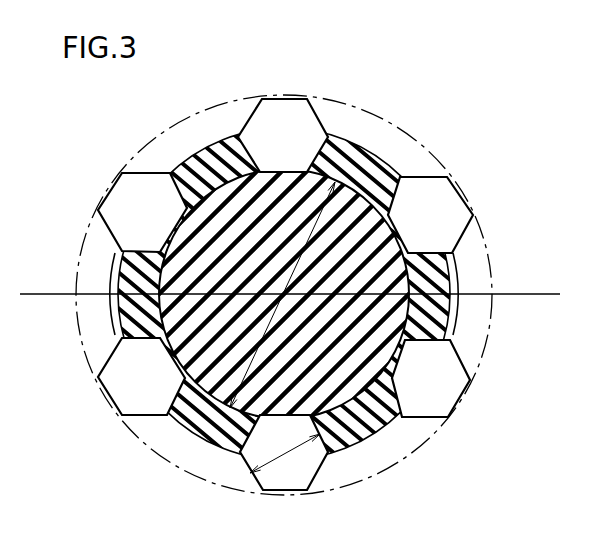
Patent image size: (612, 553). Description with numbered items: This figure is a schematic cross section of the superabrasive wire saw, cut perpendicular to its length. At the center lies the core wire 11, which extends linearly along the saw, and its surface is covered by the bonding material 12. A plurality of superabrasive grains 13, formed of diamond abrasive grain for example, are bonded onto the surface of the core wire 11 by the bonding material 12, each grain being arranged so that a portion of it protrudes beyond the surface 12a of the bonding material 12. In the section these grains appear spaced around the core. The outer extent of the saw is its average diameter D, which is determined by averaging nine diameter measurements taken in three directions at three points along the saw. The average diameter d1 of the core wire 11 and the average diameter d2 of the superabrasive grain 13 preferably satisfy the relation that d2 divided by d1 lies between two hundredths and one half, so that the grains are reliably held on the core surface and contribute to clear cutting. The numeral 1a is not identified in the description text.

The conductor assembly 1a is at (362, 428).
The core wire 11 is at (377, 227).
The bonding material 12 is at (365, 175).
The surface of bonding material 12a is at (455, 313).
The superabrasive grain 13 is at (284, 116).
The average diameter of core wire d1 is at (282, 295).
The average diameter of superabrasive grain d2 is at (285, 453).
The average diameter of superabrasive wire saw D is at (20, 294).